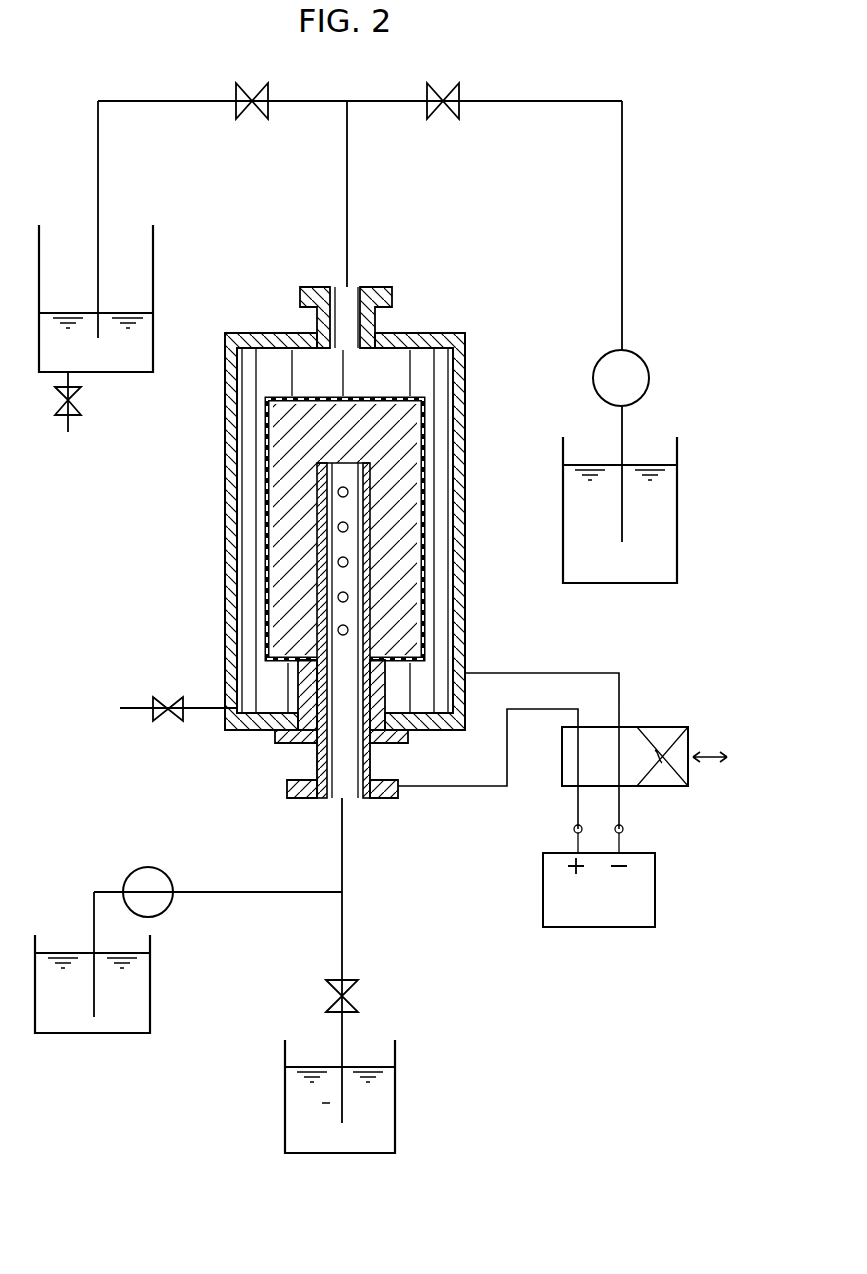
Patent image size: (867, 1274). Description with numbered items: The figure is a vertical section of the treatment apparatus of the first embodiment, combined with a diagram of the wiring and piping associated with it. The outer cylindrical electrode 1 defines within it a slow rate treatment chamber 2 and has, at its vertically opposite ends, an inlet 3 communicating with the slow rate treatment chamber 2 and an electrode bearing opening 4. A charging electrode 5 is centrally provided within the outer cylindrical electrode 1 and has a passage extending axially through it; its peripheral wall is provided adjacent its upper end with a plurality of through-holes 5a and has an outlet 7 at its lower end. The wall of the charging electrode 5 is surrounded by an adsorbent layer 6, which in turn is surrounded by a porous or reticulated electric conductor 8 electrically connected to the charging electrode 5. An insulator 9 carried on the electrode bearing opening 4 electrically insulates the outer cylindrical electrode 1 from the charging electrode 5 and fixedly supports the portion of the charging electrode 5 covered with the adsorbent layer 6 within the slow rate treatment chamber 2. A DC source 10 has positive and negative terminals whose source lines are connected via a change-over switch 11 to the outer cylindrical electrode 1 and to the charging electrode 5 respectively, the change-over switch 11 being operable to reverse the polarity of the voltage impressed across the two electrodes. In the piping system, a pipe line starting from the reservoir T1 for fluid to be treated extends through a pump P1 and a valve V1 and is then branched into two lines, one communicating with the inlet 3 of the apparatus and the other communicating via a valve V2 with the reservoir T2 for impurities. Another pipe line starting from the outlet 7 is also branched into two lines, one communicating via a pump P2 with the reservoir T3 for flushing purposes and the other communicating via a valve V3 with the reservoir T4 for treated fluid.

The outer cylindrical electrode 1 is at (465, 432).
The slow rate treatment chamber 2 is at (250, 395).
The inlet 3 is at (352, 300).
The electrode bearing opening 4 is at (303, 743).
The charging electrode 5 is at (373, 762).
The through-holes 5a is at (317, 600).
The adsorbent layer 6 is at (398, 523).
The outlet 7 is at (338, 782).
The porous or reticulated electric conductor 8 is at (267, 523).
The insulator 9 is at (293, 687).
The DC source 10 is at (643, 892).
The change-over switch 11 is at (673, 786).
The valve V1 is at (444, 88).
The valve V2 is at (254, 88).
The valve V3 is at (361, 996).
The pump P1 is at (621, 378).
The pump P2 is at (148, 892).
The reservoir for fluid to be treated T1 is at (677, 530).
The reservoir for impurities T2 is at (153, 281).
The reservoir for flushing purposes T3 is at (150, 1000).
The reservoir for treated fluid T4 is at (395, 1105).